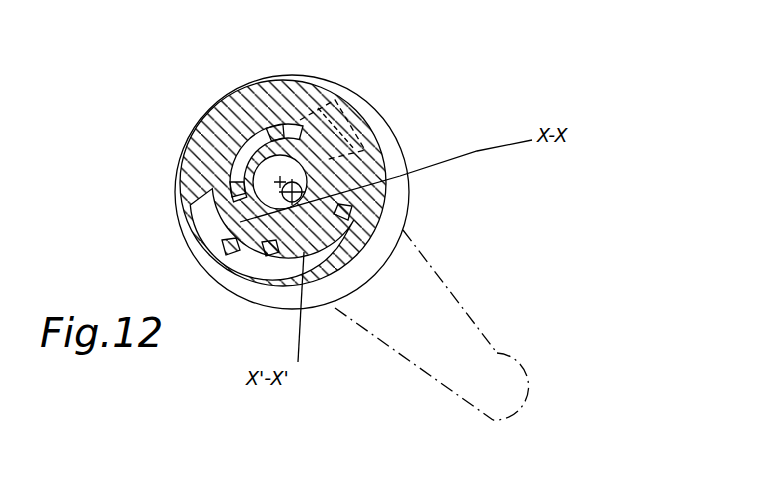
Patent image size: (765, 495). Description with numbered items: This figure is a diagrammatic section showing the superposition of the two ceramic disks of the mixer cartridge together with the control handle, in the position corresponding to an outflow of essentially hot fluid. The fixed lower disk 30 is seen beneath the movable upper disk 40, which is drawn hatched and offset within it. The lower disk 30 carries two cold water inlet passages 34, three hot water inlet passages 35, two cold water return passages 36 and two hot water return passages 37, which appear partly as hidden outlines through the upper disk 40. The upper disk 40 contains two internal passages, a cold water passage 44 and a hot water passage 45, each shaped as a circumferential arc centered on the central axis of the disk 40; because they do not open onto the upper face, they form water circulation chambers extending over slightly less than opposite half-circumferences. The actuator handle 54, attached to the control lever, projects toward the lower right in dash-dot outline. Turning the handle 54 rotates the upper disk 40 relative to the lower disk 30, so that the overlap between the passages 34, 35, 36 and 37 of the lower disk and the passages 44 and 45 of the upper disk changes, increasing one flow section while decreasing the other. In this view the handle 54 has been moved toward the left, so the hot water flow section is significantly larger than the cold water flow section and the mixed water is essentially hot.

The lower disk 30 is at (381, 120).
The cold water inlet passage 34 is at (345, 197).
The hot water inlet passage 35 is at (285, 110).
The cold water return passage 36 is at (318, 110).
The hot water return passage 37 is at (292, 130).
The upper disk 40 is at (355, 92).
The cold water passage 44 is at (314, 296).
The hot water passage 45 is at (232, 136).
The actuator handle 54 is at (495, 350).